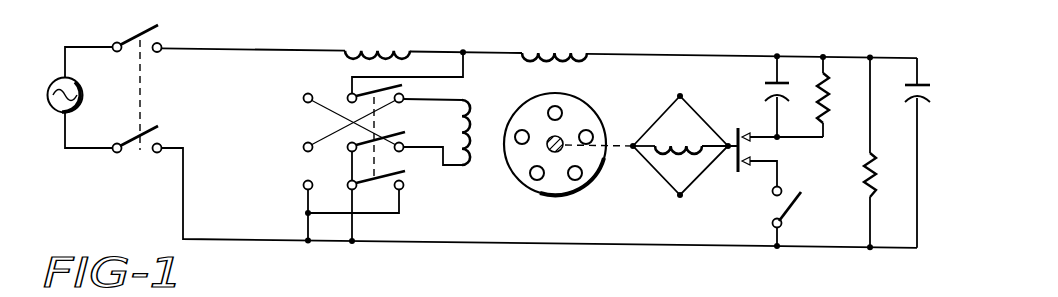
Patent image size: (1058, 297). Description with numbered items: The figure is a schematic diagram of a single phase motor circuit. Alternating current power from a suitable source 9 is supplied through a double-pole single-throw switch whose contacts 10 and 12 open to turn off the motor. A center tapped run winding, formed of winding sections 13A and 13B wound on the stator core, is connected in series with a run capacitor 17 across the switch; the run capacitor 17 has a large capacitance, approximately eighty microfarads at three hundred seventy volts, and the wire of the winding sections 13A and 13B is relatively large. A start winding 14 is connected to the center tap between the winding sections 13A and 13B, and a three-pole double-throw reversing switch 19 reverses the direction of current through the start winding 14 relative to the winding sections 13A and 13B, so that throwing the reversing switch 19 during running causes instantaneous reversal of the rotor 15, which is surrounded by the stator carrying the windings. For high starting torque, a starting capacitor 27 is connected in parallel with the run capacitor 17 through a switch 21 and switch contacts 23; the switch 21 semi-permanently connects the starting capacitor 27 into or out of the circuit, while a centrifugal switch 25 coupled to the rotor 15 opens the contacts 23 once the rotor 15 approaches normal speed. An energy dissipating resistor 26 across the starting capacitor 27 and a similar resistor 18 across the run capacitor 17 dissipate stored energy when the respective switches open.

The source 9 is at (58, 113).
The switch contact 10 is at (152, 27).
The switch contact 12 is at (128, 140).
The run winding section 13A is at (400, 51).
The run winding section 13B is at (563, 53).
The start winding 14 is at (477, 108).
The rotor 15 is at (585, 107).
The run capacitor 17 is at (948, 72).
The energy dissipating resistor 18 is at (875, 170).
The reversing switch 19 is at (301, 127).
The switch 21 is at (791, 198).
The switch contacts 23 is at (731, 135).
The centrifugal switch 25 is at (663, 160).
The energy dissipating resistor 26 is at (829, 113).
The starting capacitor 27 is at (768, 82).